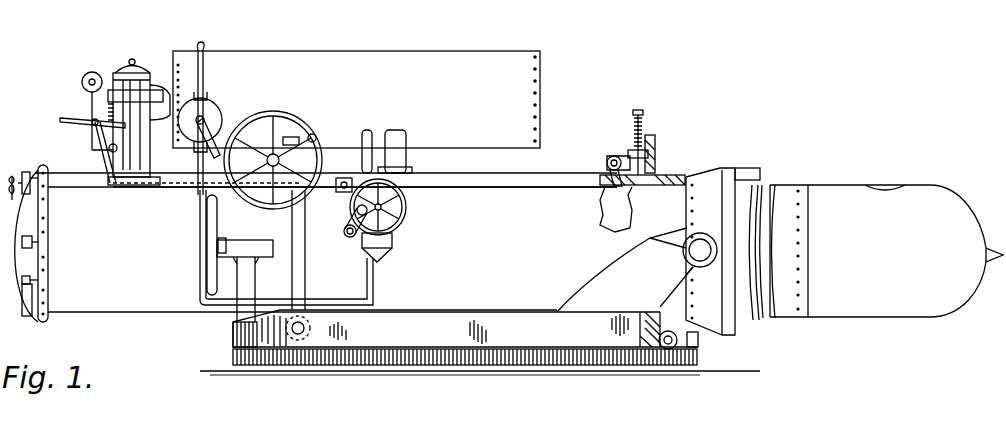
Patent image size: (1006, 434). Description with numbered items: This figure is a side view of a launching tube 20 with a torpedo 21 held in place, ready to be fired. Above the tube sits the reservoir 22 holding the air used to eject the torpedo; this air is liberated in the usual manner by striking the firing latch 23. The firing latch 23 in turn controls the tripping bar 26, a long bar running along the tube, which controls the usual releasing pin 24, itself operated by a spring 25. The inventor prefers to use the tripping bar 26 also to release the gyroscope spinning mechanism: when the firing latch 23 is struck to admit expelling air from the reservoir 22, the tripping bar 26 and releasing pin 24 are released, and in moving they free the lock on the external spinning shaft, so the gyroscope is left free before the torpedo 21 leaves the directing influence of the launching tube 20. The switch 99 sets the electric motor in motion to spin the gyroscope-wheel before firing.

The launching tube 20 is at (384, 243).
The torpedo 21 is at (764, 184).
The reservoir 22 is at (356, 99).
The firing latch 23 is at (66, 122).
The releasing pin 24 is at (643, 168).
The spring 25 is at (643, 142).
The tripping bar 26 is at (528, 190).
The switch 99 is at (205, 118).